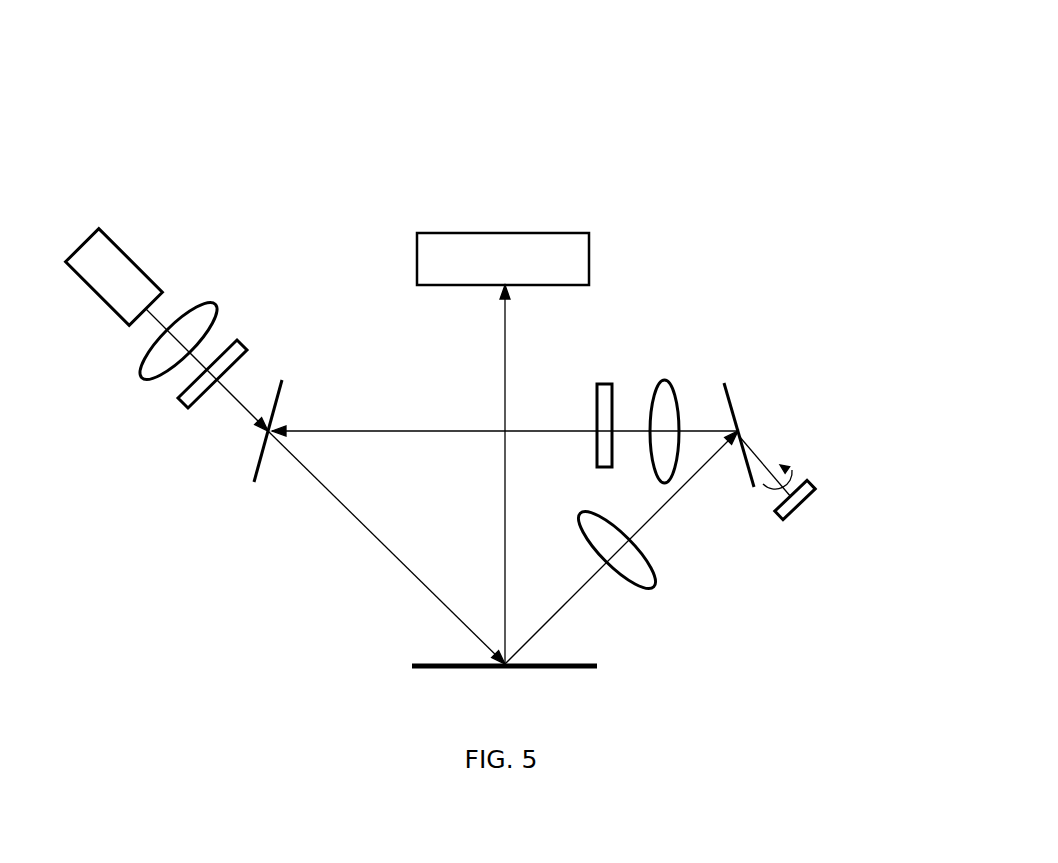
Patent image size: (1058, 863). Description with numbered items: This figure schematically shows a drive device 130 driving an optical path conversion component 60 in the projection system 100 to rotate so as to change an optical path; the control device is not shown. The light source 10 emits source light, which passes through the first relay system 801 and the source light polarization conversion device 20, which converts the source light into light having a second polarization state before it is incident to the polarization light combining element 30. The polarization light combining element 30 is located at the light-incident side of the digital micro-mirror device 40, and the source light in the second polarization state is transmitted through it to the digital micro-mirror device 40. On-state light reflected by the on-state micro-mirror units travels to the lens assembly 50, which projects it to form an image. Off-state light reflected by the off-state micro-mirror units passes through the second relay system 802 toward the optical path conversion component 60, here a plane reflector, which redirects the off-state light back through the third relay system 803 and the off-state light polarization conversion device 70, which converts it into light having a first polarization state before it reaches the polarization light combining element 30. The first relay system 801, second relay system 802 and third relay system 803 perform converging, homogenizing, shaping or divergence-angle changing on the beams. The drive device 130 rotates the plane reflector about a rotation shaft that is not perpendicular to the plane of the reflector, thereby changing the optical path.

The projection system 100 is at (468, 135).
The light source 10 is at (115, 237).
The first relay system 801 is at (191, 305).
The source light polarization conversion device 20 is at (228, 340).
The polarization light combining element 30 is at (268, 397).
The lens assembly 50 is at (535, 232).
The off-state light polarization conversion device 70 is at (603, 382).
The third relay system 803 is at (665, 380).
The optical path conversion component 60 is at (737, 388).
The drive device 130 is at (810, 480).
The second relay system 802 is at (653, 565).
The digital micro-mirror device 40 is at (568, 663).